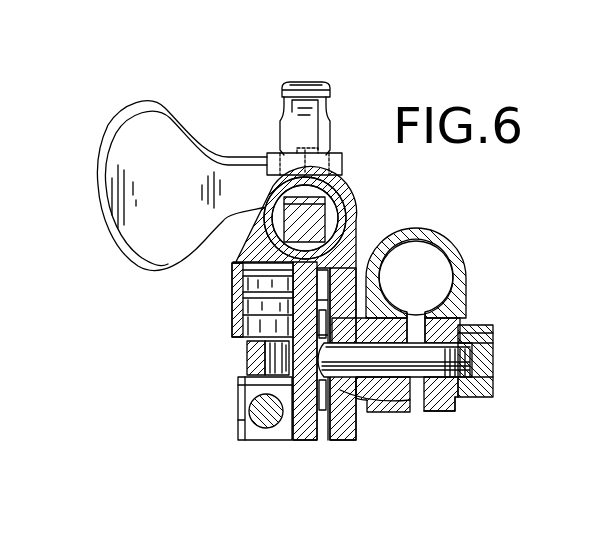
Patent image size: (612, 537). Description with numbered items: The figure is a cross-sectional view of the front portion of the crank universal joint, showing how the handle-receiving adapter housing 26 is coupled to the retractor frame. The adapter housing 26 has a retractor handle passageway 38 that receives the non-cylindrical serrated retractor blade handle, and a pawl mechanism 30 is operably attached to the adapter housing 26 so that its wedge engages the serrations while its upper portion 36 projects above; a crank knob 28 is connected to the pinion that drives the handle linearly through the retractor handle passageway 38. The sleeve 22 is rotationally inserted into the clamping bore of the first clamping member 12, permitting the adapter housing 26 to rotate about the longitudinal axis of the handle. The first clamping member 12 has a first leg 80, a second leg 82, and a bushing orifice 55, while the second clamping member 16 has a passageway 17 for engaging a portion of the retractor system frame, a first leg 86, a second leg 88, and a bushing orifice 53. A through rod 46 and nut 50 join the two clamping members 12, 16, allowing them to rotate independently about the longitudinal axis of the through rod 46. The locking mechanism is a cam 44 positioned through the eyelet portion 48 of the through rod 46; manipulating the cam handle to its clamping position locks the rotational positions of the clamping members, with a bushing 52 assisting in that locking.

The first clamping member 12 is at (232, 311).
The second clamping member 16 is at (469, 272).
The passageway 17 is at (436, 266).
The sleeve 22 is at (342, 204).
The adapter housing 26 is at (230, 264).
The crank knob 28 is at (100, 138).
The pawl mechanism 30 is at (338, 92).
The upper portion 36 is at (307, 72).
The retractor handle passageway 38 is at (352, 221).
The cam 44 is at (257, 364).
The through rod 46 is at (432, 355).
The eyelet portion 48 is at (243, 357).
The nut 50 is at (486, 400).
The bushing 52 is at (380, 400).
The bushing orifice 53 is at (393, 316).
The bushing orifice 55 is at (352, 306).
The first leg 80 is at (305, 441).
The second leg 82 is at (344, 441).
The first leg 86 is at (405, 415).
The second leg 88 is at (454, 418).